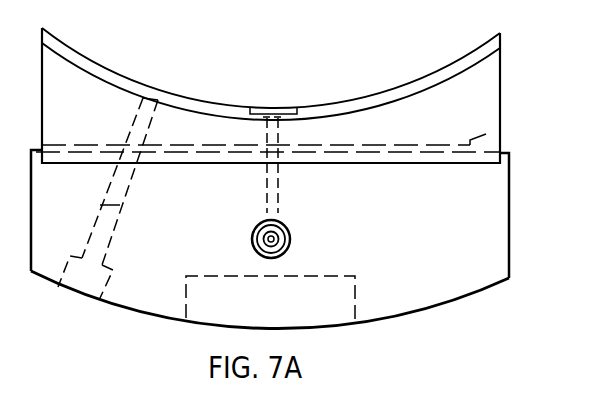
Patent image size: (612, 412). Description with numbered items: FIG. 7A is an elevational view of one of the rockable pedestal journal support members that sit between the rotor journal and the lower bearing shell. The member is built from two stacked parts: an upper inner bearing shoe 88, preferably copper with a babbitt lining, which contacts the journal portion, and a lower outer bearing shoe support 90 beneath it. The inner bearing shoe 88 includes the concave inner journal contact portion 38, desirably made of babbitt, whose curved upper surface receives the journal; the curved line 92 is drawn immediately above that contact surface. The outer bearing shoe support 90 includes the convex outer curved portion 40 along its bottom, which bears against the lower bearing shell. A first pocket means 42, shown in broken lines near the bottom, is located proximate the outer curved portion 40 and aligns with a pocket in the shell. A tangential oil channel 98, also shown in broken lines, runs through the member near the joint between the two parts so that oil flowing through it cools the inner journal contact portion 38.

The inner journal contact portion 38 is at (384, 93).
The outer curved portion 40 is at (386, 318).
The first pocket means 42 is at (357, 278).
The inner bearing shoe 88 is at (502, 94).
The outer bearing shoe support 90 is at (507, 211).
The outer curved surface 92 is at (455, 62).
The tangential oil channels 98 is at (486, 134).